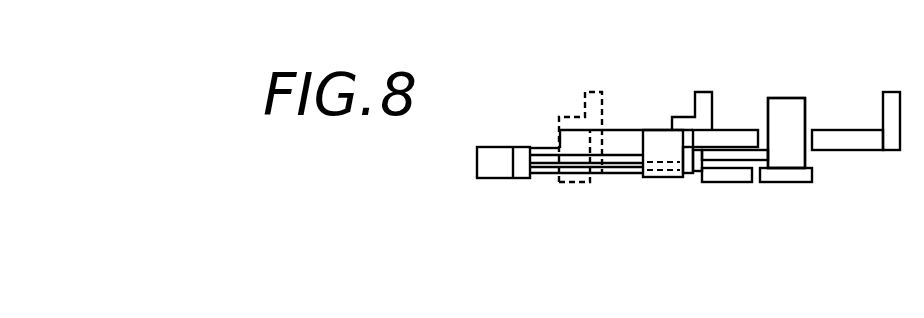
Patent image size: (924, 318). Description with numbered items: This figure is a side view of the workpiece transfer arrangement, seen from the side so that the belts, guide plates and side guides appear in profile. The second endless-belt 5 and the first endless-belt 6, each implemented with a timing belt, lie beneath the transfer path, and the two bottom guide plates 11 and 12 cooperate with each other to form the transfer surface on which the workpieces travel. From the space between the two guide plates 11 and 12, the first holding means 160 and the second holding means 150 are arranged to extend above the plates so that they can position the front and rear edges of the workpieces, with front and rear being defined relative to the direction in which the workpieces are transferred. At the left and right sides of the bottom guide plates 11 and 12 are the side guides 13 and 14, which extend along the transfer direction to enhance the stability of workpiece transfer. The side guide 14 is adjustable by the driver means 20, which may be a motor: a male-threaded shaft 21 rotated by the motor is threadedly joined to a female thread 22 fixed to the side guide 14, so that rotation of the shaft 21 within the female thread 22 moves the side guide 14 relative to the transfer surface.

The second endless-belt 5 is at (782, 177).
The first endless-belt 6 is at (732, 172).
The bottom guide plate 11 is at (850, 142).
The bottom guide plate 12 is at (747, 127).
The side guide 13 is at (890, 92).
The side guide 14 is at (688, 117).
The driver means 20 is at (502, 165).
The male-threaded shaft 21 is at (580, 163).
The female thread 22 is at (663, 172).
The second holding means 150 is at (792, 107).
The first holding means 160 is at (788, 93).